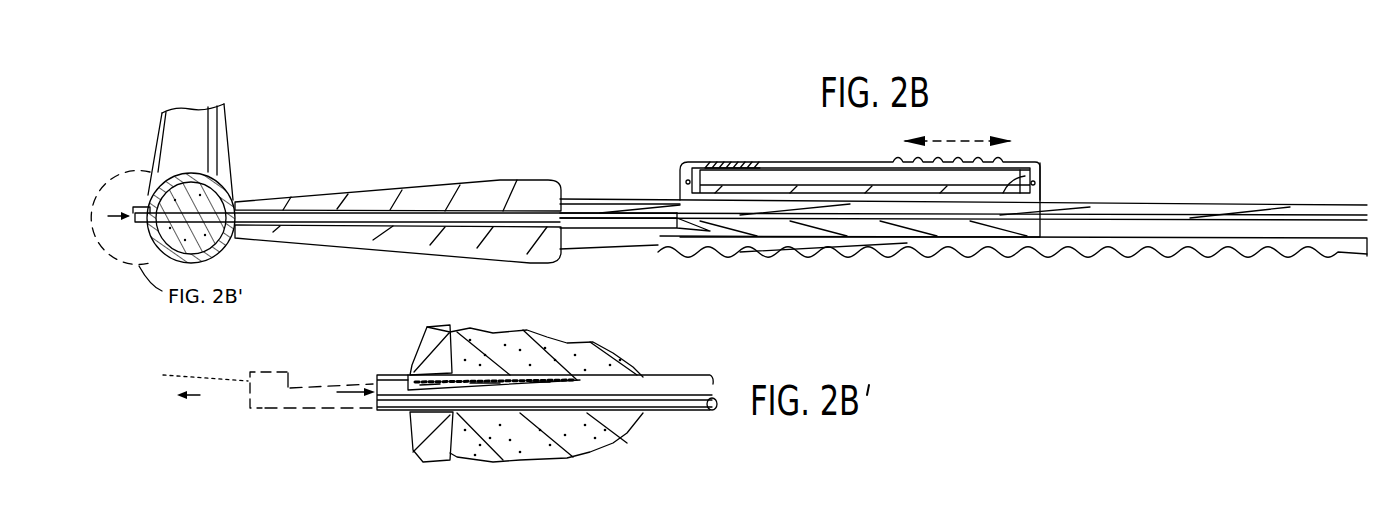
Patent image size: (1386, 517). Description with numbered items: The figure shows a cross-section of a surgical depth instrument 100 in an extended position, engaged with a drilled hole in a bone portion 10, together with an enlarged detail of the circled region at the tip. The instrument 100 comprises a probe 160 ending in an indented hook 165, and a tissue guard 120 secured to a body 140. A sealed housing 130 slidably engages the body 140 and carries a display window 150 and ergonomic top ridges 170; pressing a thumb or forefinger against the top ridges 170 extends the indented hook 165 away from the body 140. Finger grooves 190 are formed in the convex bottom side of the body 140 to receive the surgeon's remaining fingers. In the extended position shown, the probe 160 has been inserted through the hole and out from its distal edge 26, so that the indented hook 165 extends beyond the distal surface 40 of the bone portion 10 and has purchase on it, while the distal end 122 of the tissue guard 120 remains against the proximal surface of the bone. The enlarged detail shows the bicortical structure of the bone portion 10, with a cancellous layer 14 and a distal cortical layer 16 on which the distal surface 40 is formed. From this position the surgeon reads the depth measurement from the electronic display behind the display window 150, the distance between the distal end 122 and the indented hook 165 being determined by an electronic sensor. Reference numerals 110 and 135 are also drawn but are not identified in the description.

In FIG. 2B, the bone portion 10 is at (228, 134).
In FIG. 2B', the cancellous layer 14 is at (533, 330).
In FIG. 2B', the distal cortical layer 16 is at (450, 326).
In FIG. 2B', the distal edge 26 is at (412, 375).
In FIG. 2B', the distal surface 40 is at (413, 433).
In FIG. 2B, the instrument 100 is at (643, 96).
In FIG. 2B, the handle assembly 110 is at (646, 169).
In FIG. 2B, the tissue guard 120 is at (443, 197).
In FIG. 2B, the distal end 122 is at (228, 232).
In FIG. 2B, the sealed housing 130 is at (827, 162).
In FIG. 2B, the latch 135 is at (1043, 166).
In FIG. 2B, the body 140 is at (1095, 212).
In FIG. 2B, the display window 150 is at (727, 160).
In FIG. 2B, the probe 160 is at (620, 247).
In FIG. 2B, the indented hook 165 is at (127, 171).
In FIG. 2B', the indented hook 165 is at (370, 406).
In FIG. 2B, the top ridges 170 is at (1030, 162).
In FIG. 2B, the finger grooves 190 is at (1033, 252).